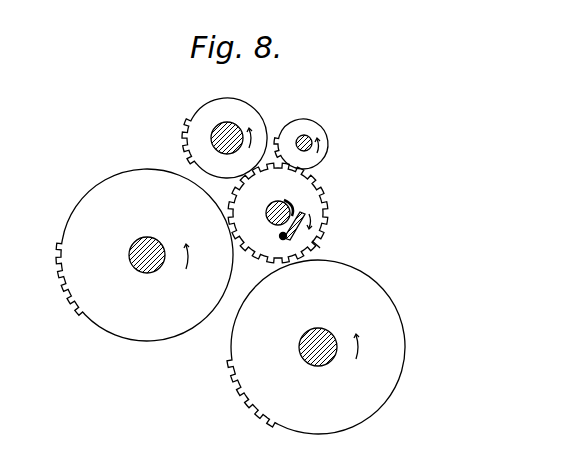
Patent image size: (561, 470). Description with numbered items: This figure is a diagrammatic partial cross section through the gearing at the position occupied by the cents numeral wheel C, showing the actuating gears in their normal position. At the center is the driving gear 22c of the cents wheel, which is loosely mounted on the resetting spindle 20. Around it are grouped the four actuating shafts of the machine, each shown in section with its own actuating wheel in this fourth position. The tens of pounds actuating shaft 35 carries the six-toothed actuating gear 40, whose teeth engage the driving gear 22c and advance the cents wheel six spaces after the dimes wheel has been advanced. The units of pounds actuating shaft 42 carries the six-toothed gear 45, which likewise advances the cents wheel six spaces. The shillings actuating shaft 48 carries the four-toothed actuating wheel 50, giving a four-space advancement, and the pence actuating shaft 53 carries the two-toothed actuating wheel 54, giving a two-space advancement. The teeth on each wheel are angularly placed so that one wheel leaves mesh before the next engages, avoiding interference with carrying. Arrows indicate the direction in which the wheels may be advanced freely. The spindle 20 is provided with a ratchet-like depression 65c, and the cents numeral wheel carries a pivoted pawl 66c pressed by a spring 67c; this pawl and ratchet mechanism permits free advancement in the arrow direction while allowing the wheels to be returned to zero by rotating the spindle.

The resetting spindle 20 is at (302, 207).
The driving gear of the cents numeral wheel 22c is at (318, 247).
The tens of pounds actuating shaft 35 is at (318, 366).
The actuating gear 40 is at (400, 322).
The units of pounds actuating shaft 42 is at (139, 270).
The six-toothed gear 45 is at (135, 335).
The shillings actuating shaft 48 is at (216, 129).
The four-toothed actuating wheel 50 is at (245, 111).
The pence actuating shaft 53 is at (305, 147).
The two-toothed actuating wheel 54 is at (316, 123).
The ratchet-like depression 65c is at (290, 204).
The pivoted pawl 66c is at (282, 238).
The spring 67c is at (308, 216).